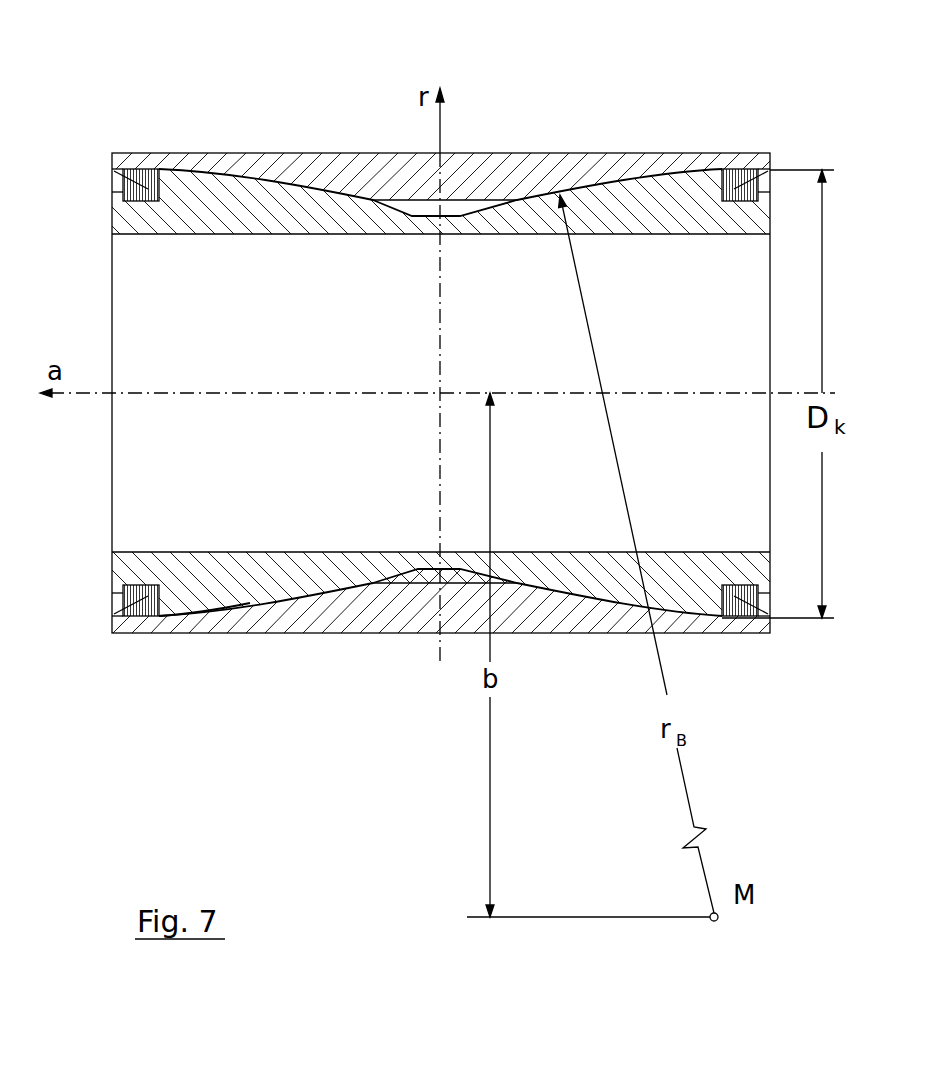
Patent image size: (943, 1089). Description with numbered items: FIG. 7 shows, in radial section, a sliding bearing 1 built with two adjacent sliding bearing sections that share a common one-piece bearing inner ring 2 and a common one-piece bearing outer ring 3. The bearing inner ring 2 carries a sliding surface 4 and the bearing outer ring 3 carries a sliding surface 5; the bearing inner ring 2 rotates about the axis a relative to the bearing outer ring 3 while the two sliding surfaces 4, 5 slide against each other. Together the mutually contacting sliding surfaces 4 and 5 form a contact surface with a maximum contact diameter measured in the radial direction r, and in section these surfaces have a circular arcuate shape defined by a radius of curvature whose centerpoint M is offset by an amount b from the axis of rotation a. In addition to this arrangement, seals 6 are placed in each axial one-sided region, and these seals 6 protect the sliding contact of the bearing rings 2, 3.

The roll / sleeve assembly 1 is at (472, 62).
The bearing inner ring 2 is at (245, 585).
The bearing outer ring 3 is at (340, 618).
The sliding surface 4 is at (588, 603).
The sliding surface 5 is at (196, 612).
The seal 6 is at (143, 180).